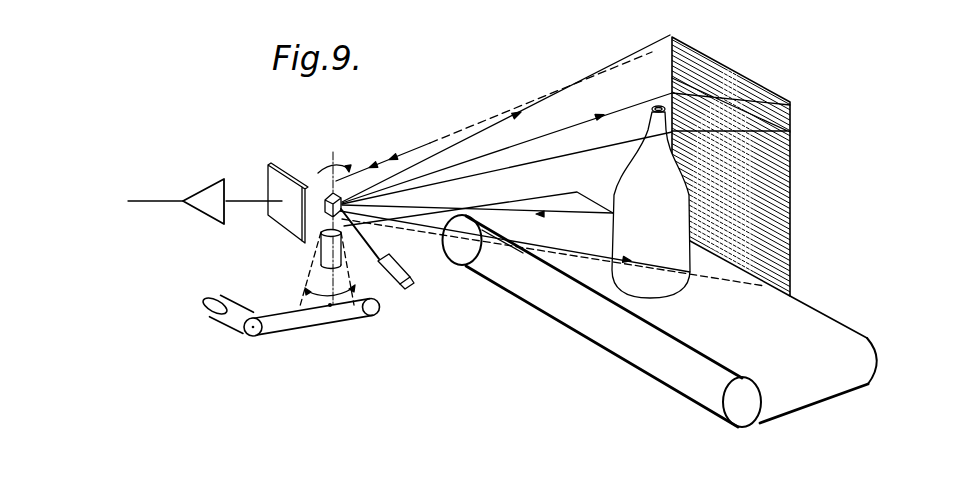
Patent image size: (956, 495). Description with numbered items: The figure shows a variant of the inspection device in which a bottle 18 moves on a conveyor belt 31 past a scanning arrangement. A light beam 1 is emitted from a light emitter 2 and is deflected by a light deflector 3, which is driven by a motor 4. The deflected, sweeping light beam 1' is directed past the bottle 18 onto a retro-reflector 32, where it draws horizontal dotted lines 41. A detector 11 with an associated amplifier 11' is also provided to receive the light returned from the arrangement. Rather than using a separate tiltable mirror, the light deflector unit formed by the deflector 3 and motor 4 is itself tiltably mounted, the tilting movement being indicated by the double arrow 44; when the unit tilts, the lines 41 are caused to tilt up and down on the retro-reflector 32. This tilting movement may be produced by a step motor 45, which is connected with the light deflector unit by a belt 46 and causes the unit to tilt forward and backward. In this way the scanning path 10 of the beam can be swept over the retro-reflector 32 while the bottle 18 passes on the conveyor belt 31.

The light beam 1 is at (388, 246).
The sweeping light beam 1' is at (507, 119).
The light emitter 2 is at (402, 288).
The light deflector 3 is at (324, 181).
The motor 4 is at (326, 247).
The scanning beam 10 is at (418, 147).
The detector 11 is at (267, 186).
The amplifier 11' is at (176, 172).
The bottle 18 is at (662, 248).
The conveyor belt 31 is at (787, 320).
The retro-reflector 32 is at (790, 197).
The horizontal dotted lines 41 is at (790, 131).
The double arrow 44 is at (330, 305).
The step motor 45 is at (230, 326).
The belt 46 is at (277, 336).